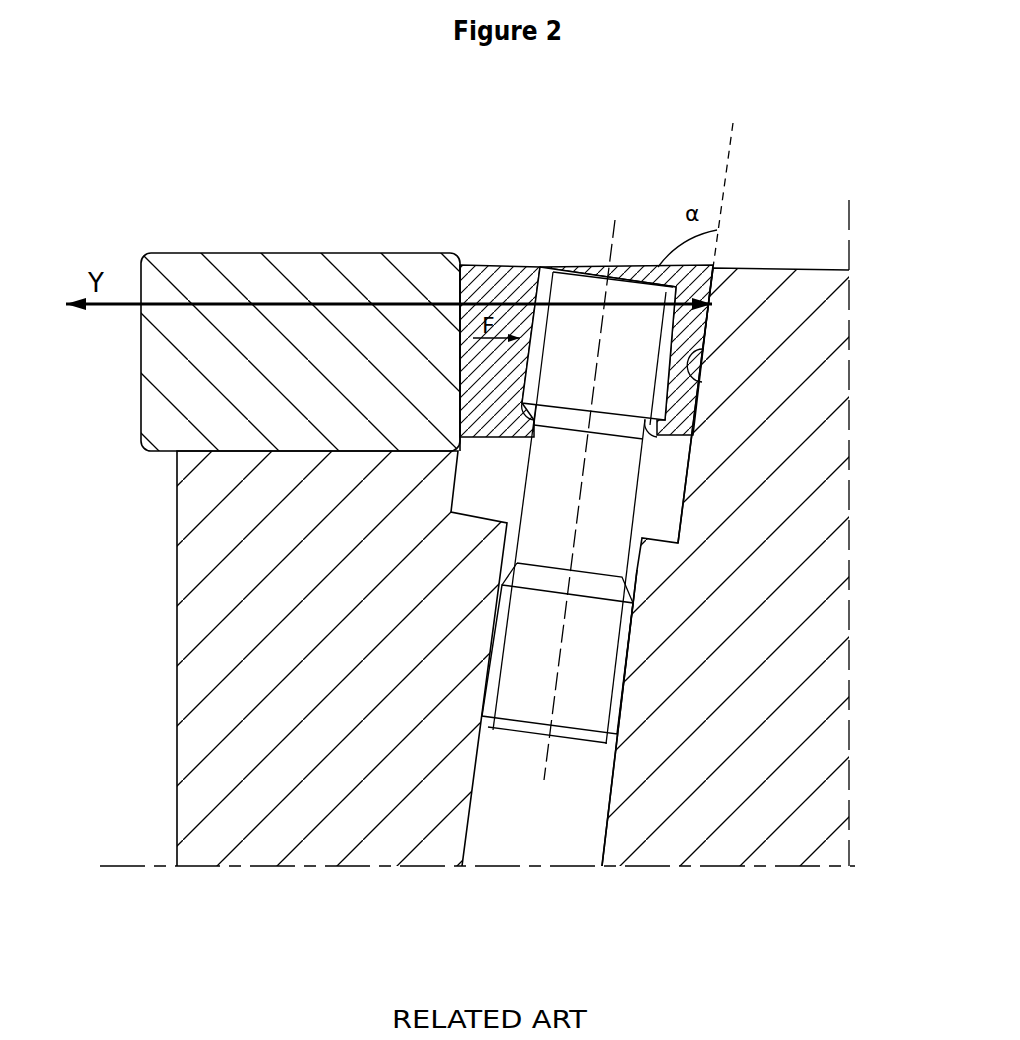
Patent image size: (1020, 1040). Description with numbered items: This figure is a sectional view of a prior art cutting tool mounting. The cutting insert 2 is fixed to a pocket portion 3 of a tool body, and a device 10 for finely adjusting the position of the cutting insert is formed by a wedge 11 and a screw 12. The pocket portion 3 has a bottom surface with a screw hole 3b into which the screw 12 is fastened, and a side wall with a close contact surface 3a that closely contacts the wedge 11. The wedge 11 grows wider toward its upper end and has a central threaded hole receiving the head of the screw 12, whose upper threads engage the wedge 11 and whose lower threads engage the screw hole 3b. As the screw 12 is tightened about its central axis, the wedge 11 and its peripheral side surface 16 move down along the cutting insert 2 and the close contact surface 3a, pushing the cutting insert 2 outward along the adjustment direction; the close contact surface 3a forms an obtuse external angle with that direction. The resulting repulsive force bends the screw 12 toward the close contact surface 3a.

The cutting insert 2 is at (300, 267).
The pocket portion 3 is at (362, 452).
The close contact surface 3a is at (700, 352).
The screw hole 3b is at (640, 570).
The device for finely adjusting the position of the cutting insert 10 is at (589, 113).
The wedge 11 is at (502, 282).
The screw 12 is at (637, 293).
The peripheral side surface 16 is at (458, 300).